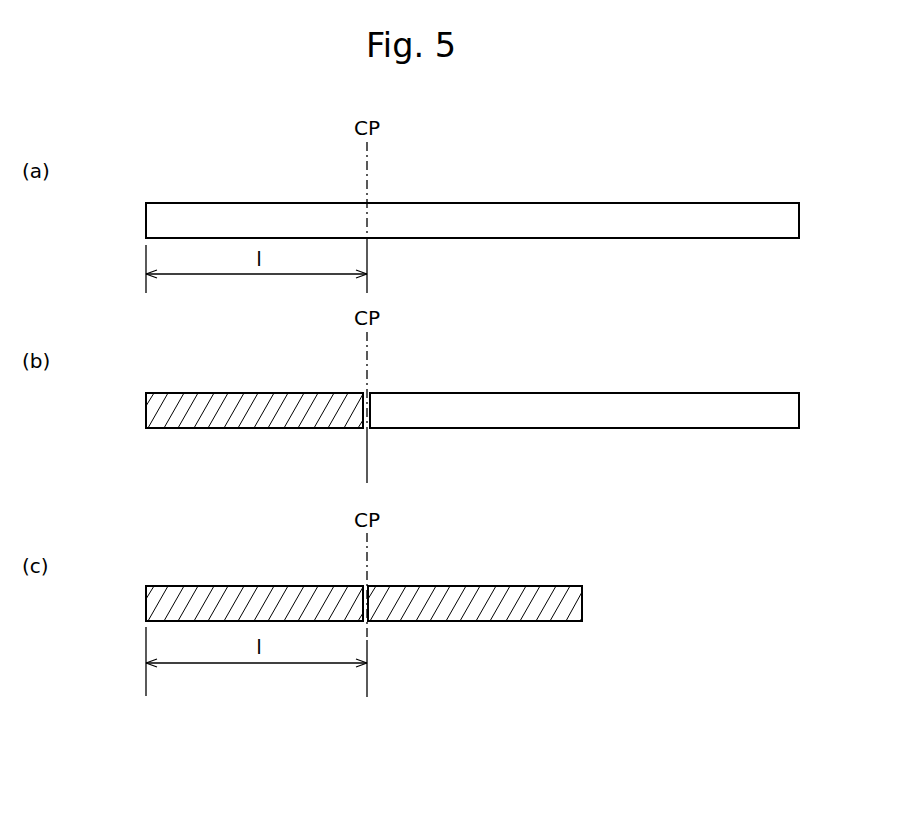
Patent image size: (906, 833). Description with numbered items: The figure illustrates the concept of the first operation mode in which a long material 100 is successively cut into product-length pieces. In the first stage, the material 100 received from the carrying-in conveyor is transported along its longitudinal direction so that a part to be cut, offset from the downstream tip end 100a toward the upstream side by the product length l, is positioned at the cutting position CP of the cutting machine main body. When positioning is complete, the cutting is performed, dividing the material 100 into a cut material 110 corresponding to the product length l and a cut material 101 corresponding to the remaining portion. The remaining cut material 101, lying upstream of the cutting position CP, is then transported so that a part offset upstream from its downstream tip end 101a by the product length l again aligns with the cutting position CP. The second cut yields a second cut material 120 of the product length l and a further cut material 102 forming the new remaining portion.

The material 100 is at (626, 202).
The tip end 100a is at (147, 222).
The cut material 110 is at (260, 392).
The cut material 101 is at (627, 392).
The tip end 101a is at (372, 408).
The second cut material 120 is at (262, 585).
The cut material 102 is at (512, 585).